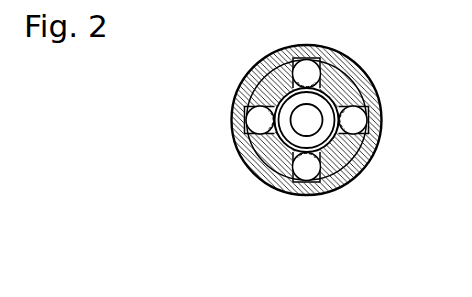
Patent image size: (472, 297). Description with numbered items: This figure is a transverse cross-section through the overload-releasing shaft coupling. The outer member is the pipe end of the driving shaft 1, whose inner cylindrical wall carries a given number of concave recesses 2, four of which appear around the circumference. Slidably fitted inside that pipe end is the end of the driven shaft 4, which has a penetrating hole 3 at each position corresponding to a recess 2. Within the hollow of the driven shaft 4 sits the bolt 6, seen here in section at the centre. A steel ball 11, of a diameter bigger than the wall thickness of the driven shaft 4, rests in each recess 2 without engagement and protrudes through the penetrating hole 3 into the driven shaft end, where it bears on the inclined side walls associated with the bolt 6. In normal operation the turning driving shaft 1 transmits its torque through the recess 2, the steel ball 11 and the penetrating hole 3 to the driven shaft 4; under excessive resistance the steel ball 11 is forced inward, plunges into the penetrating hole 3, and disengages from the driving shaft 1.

The driving shaft 1 is at (341, 66).
The recess 2 is at (368, 108).
The penetrating hole 3 is at (338, 104).
The driven shaft 4 is at (341, 157).
The bolt 6 is at (294, 128).
The steel ball 11 is at (316, 183).